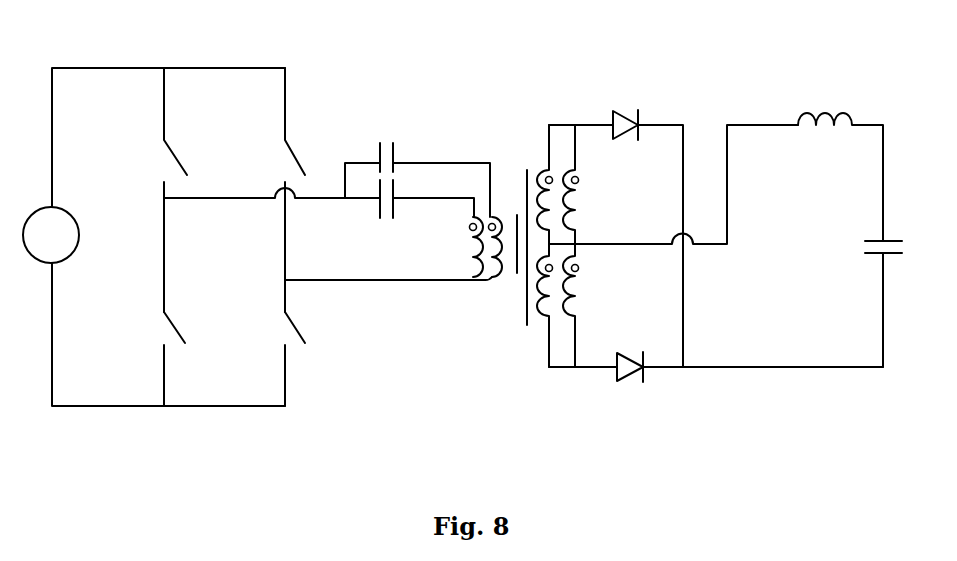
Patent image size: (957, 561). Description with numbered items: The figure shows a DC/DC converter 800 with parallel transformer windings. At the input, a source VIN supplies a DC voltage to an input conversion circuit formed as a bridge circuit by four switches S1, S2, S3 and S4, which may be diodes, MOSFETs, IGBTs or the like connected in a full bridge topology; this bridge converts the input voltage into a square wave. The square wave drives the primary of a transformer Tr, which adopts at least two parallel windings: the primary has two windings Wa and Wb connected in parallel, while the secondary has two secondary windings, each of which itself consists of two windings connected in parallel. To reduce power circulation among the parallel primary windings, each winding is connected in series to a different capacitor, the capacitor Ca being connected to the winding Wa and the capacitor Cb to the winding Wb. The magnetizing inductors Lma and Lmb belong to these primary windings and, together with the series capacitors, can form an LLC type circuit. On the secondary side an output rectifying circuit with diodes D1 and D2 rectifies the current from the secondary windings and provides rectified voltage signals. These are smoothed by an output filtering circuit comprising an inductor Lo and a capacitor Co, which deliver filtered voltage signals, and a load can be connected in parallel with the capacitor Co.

The DC/DC converter 800 is at (738, 46).
The source VIN is at (51, 235).
The switch S1 is at (185, 190).
The switch S2 is at (302, 190).
The switch S3 is at (184, 351).
The switch S4 is at (301, 351).
The capacitor Ca is at (417, 177).
The capacitor Cb is at (427, 195).
The winding Wa is at (487, 265).
The winding Wb is at (460, 229).
The magnetizing inductor Lma is at (485, 263).
The magnetizing inductor Lmb is at (450, 258).
The transformer Tr is at (493, 246).
The diode D1 is at (632, 136).
The diode D2 is at (631, 353).
The inductor Lo is at (840, 160).
The capacitor Co is at (866, 304).